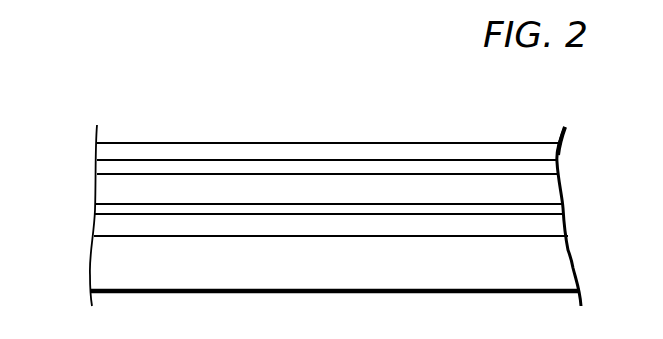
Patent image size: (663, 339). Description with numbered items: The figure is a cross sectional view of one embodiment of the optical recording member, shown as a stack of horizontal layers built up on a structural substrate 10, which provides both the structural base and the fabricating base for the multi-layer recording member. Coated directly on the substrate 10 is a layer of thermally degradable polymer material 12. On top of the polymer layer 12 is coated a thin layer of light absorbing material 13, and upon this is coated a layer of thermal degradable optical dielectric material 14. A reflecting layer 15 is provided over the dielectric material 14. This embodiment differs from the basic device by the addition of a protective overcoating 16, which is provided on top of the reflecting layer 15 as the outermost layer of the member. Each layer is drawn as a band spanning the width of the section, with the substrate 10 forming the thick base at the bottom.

The protective overcoating 16 is at (108, 150).
The reflecting layer 15 is at (103, 163).
The thermal degradable optical dielectric material 14 is at (108, 188).
The light absorbing material 13 is at (103, 208).
The thermally degradable polymer material 12 is at (105, 227).
The structural substrate 10 is at (103, 263).